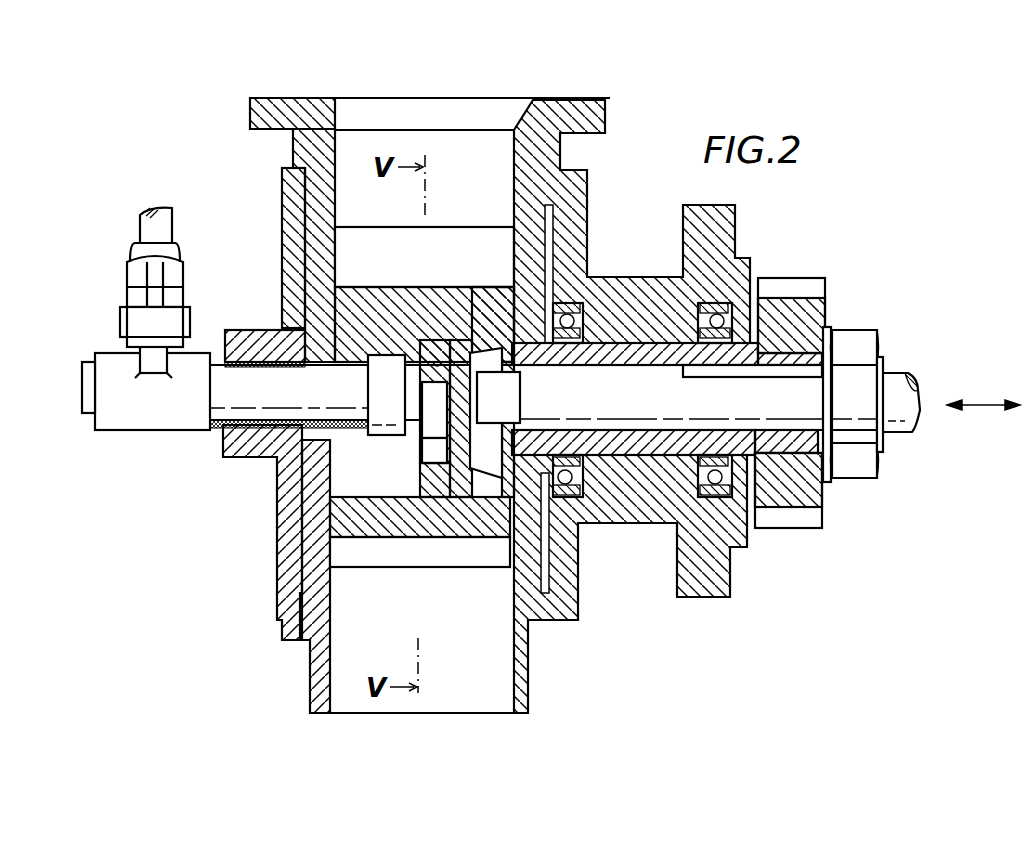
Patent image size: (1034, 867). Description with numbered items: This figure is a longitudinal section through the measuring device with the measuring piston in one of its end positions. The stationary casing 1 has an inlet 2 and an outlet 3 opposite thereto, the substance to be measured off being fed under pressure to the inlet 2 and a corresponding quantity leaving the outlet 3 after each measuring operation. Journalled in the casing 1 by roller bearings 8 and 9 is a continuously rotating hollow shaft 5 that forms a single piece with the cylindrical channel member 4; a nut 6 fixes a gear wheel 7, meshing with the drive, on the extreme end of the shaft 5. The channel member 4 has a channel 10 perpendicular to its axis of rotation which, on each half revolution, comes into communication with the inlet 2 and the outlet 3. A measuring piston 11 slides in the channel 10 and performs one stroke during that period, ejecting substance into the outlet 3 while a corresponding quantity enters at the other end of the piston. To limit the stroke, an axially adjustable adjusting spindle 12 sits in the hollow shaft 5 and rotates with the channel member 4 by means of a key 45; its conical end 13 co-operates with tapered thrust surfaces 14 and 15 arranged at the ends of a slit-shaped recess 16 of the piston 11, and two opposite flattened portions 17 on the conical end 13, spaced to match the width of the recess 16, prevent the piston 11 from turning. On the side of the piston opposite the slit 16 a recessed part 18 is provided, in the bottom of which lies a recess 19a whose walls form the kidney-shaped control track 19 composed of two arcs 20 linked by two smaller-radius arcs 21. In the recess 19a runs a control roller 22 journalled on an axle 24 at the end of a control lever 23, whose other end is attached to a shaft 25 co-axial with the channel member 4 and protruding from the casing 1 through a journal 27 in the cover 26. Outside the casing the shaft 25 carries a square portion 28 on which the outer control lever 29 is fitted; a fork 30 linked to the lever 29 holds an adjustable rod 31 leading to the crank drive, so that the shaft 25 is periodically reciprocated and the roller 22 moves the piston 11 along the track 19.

The stationary casing 1 is at (580, 197).
The inlet 2 is at (362, 122).
The outlet 3 is at (342, 687).
The channel member 4 is at (309, 190).
The hollow shaft 5 is at (625, 350).
The nut 6 is at (853, 350).
The gear wheel 7 is at (797, 297).
The roller bearing 8 is at (573, 303).
The roller bearing 9 is at (693, 293).
The channel 10 is at (347, 265).
The measuring piston 11 is at (445, 313).
The adjusting spindle 12 is at (893, 400).
The conical end 13 is at (503, 405).
The tapered thrust surface 14 is at (492, 353).
The tapered thrust surface 15 is at (498, 397).
The slit-shaped recess 16 is at (487, 467).
The flattened portions 17 is at (512, 388).
The recessed part 18 is at (340, 480).
The control track 19 is at (427, 357).
The recess 19a is at (445, 455).
The arcs of a circle 20 is at (447, 452).
The arcs of a circle 21 is at (432, 448).
The control roller 22 is at (428, 423).
The control lever 23 is at (378, 385).
The axle 24 is at (415, 402).
The shaft 25 is at (221, 408).
The cover 26 is at (293, 278).
The journal 27 is at (220, 362).
The square portion 28 is at (88, 400).
The outer control lever 29 is at (150, 355).
The fork 30 is at (130, 330).
The rod 31 is at (163, 217).
The key 45 is at (753, 373).